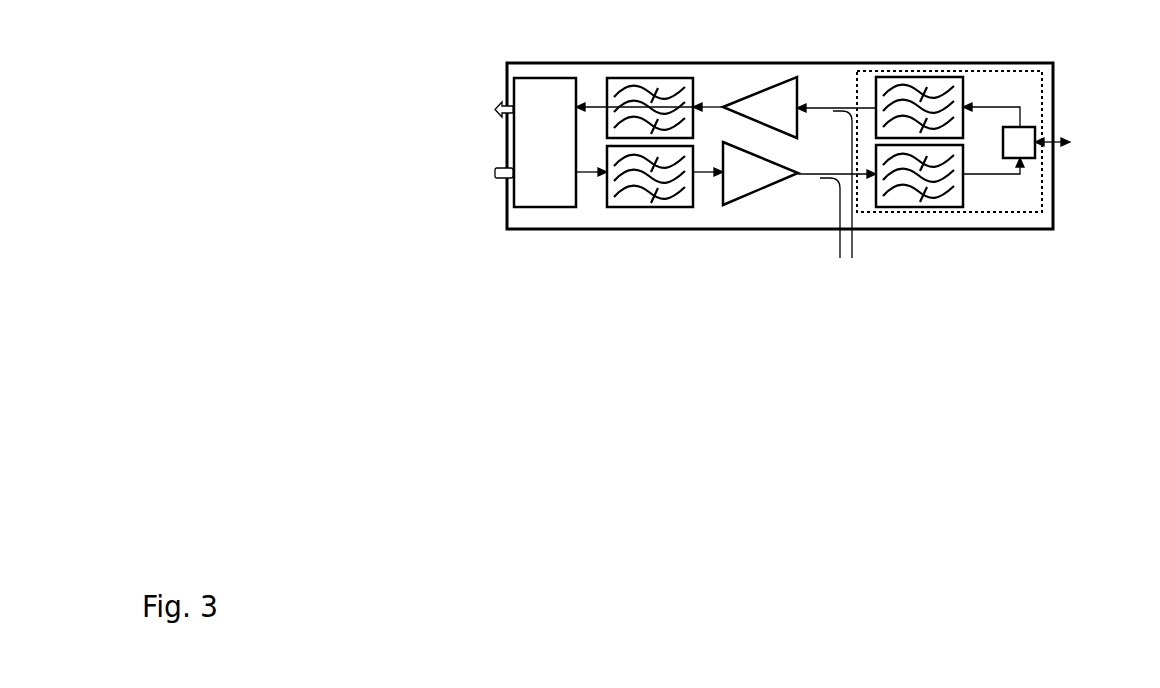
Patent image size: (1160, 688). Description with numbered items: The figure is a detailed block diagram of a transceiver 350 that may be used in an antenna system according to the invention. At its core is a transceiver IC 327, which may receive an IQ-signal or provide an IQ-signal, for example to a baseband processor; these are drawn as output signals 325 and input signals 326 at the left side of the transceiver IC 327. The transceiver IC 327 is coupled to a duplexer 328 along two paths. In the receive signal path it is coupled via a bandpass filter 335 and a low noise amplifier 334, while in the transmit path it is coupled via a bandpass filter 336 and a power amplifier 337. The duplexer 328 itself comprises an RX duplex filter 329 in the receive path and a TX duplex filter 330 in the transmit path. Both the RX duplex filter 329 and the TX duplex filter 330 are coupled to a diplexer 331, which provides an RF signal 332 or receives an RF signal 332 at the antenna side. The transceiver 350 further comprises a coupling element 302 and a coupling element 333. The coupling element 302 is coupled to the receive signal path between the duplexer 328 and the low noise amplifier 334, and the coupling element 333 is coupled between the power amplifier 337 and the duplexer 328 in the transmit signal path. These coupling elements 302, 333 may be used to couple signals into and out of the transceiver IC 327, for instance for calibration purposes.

The coupling element 302 is at (855, 214).
The output signals 325 is at (482, 104).
The input signals 326 is at (490, 178).
The transceiver IC 327 is at (538, 80).
The duplexer 328 is at (880, 72).
The RX duplex filter 329 is at (945, 75).
The TX duplex filter 330 is at (937, 207).
The diplexer 331 is at (1037, 160).
The RF signal 332 is at (1057, 137).
The coupling element 333 is at (833, 216).
The low noise amplifier 334 is at (770, 90).
The band pass filter 335 is at (637, 80).
The band pass filter 336 is at (620, 207).
The power amplifier 337 is at (743, 207).
The transceiver 350 is at (1053, 72).